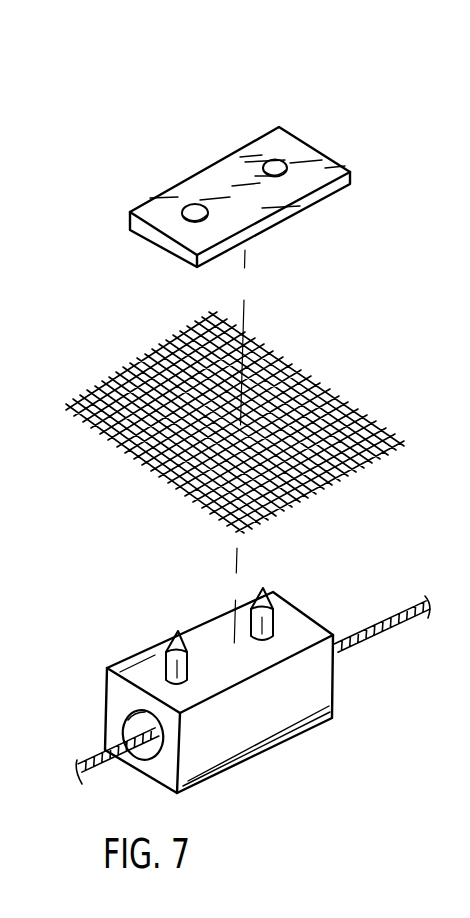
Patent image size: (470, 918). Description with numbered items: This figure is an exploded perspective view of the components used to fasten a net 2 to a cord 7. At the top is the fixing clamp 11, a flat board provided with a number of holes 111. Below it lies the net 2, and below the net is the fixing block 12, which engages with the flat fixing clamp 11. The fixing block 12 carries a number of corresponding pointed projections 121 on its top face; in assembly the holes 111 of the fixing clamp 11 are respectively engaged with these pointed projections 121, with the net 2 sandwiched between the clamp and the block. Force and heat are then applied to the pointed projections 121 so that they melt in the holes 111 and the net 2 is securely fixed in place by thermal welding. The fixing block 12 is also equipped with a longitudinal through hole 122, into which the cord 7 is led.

The fixing clamp 11 is at (257, 133).
The holes 111 is at (192, 205).
The net 2 is at (330, 378).
The fixing block 12 is at (293, 733).
The pointed projections 121 is at (280, 614).
The longitudinal through hole 122 is at (128, 728).
The cord 7 is at (400, 613).